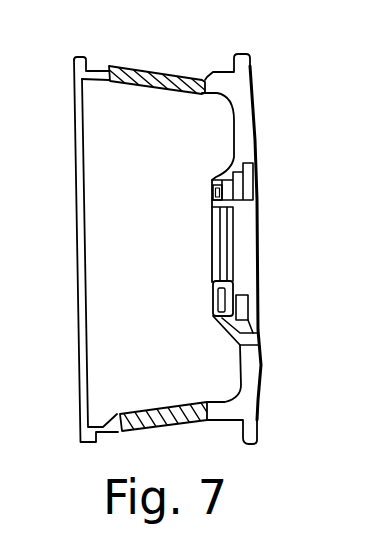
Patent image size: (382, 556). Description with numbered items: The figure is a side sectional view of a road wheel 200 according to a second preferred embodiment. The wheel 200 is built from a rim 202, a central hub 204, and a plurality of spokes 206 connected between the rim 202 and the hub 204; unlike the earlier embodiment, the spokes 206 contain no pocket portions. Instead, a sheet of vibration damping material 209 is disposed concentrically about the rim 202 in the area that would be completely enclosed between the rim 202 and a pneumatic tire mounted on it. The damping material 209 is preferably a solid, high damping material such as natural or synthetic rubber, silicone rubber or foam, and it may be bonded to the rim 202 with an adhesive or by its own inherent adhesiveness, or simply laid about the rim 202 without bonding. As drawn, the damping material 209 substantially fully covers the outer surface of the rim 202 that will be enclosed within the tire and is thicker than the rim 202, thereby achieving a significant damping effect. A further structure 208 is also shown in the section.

The wheel 200 is at (52, 339).
The rim 202 is at (93, 70).
The central hub 204 is at (264, 228).
The spokes 206 is at (253, 102).
The stepped bracket / mounting structure 208 is at (255, 200).
The vibration damping material 209 is at (160, 72).